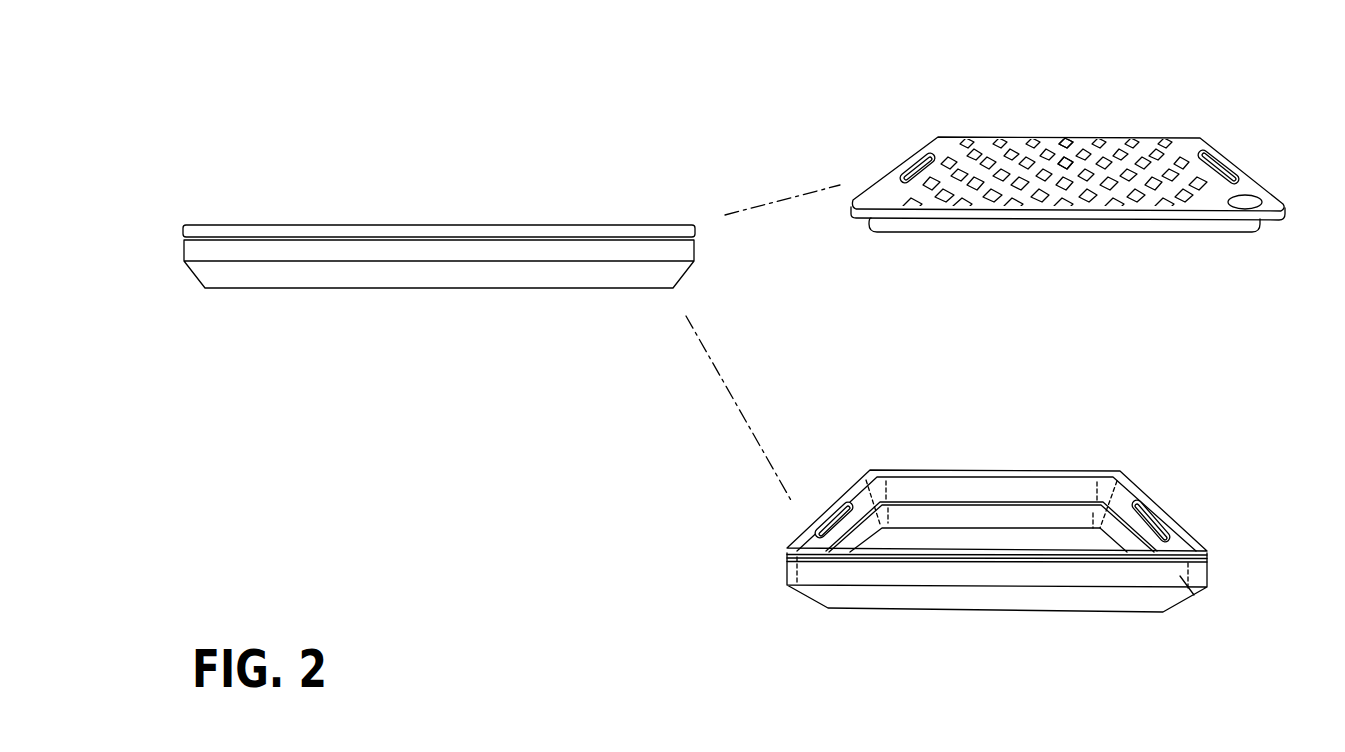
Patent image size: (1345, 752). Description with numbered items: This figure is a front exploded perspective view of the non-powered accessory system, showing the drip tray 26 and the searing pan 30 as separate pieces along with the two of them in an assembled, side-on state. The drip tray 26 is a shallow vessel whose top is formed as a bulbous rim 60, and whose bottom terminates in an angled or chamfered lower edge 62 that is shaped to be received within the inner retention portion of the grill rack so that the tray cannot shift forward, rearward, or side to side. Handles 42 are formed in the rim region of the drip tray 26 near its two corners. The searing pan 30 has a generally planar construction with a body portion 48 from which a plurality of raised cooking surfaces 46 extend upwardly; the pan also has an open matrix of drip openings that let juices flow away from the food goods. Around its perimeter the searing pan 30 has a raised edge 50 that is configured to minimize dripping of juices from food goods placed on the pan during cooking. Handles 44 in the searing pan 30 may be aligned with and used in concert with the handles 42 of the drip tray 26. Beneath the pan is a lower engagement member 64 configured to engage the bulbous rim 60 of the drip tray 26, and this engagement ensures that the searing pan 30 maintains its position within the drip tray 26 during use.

The drip tray 26 is at (1177, 575).
The searing pan 30 is at (1245, 183).
The handles 42 is at (814, 519).
The handles 44 is at (917, 162).
The raised cooking surfaces 46 is at (1033, 142).
The body portion 48 is at (1072, 152).
The raised edge 50 is at (1240, 133).
The bulbous rim 60 is at (181, 232).
The chamfered lower edge 62 is at (190, 270).
The lower engagement member 64 is at (1217, 227).